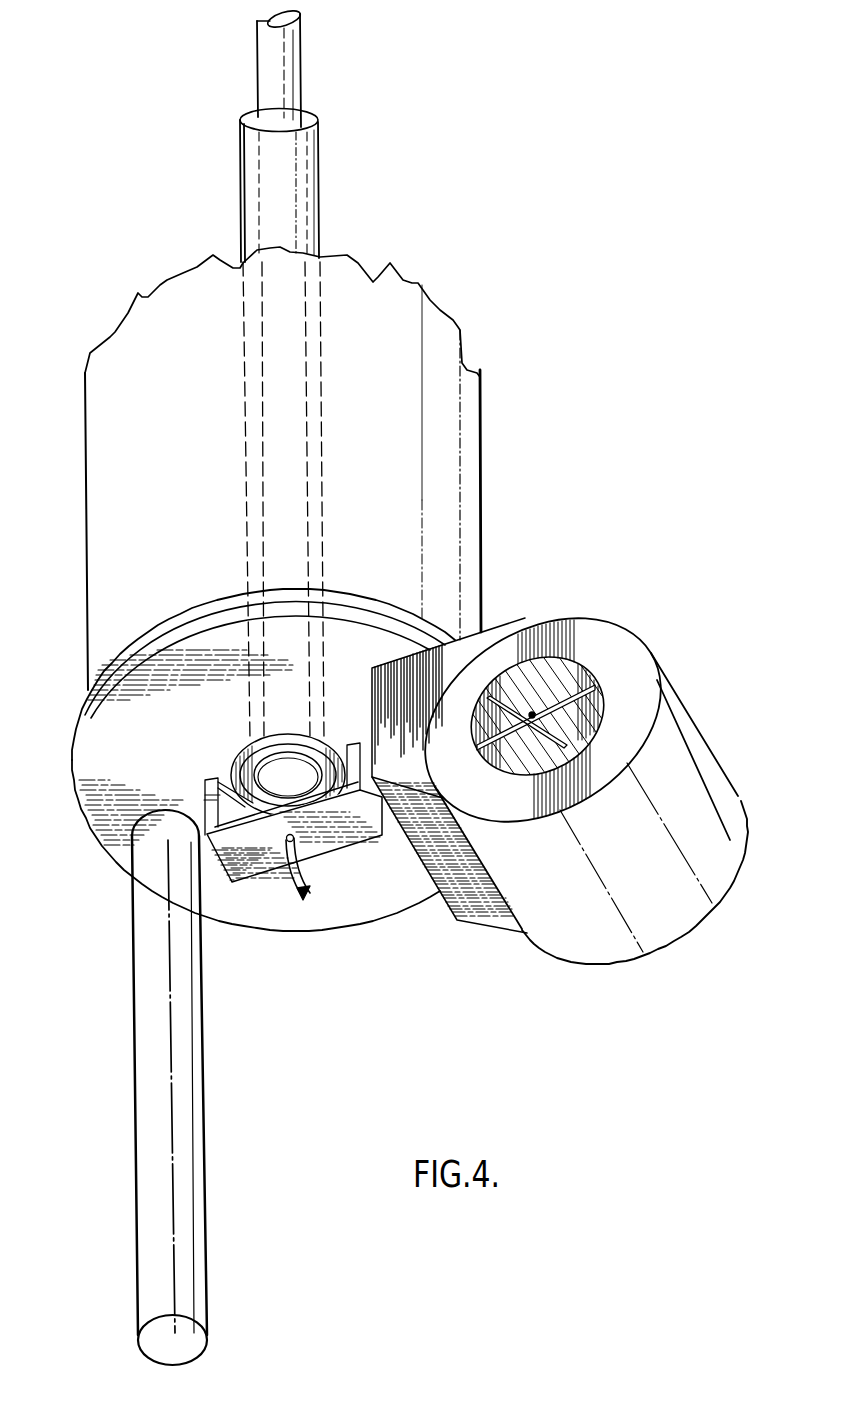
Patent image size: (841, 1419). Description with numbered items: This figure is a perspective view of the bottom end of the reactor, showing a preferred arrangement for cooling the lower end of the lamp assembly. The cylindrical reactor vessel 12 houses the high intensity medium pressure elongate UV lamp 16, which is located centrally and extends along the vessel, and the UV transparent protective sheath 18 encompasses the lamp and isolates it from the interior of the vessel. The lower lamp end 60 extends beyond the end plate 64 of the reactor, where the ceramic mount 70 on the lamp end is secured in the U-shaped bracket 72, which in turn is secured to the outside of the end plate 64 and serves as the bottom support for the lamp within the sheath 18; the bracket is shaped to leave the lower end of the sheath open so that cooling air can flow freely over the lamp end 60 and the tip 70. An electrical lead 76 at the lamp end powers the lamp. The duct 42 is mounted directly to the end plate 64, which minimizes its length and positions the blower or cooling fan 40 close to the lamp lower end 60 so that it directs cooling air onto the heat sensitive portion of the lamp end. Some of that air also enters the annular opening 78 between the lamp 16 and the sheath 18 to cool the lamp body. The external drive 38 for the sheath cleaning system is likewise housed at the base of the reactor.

The reactor vessel 12 is at (450, 413).
The UV lamp 16 is at (293, 81).
The protective sheath 18 is at (315, 174).
The external drive 38 is at (148, 1063).
The cooling fan 40 is at (610, 638).
The duct 42 is at (477, 900).
The lamp end 60 is at (277, 774).
The end plate 64 is at (365, 642).
The ceramic mount 70 is at (277, 850).
The U-shaped bracket 72 is at (237, 846).
The electrical lead 76 is at (305, 878).
The annular opening 78 is at (230, 776).